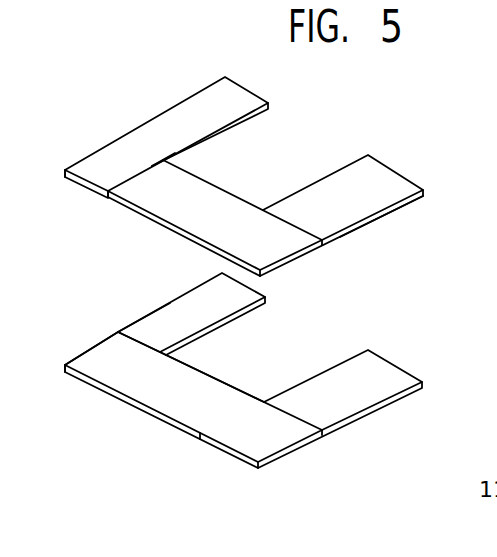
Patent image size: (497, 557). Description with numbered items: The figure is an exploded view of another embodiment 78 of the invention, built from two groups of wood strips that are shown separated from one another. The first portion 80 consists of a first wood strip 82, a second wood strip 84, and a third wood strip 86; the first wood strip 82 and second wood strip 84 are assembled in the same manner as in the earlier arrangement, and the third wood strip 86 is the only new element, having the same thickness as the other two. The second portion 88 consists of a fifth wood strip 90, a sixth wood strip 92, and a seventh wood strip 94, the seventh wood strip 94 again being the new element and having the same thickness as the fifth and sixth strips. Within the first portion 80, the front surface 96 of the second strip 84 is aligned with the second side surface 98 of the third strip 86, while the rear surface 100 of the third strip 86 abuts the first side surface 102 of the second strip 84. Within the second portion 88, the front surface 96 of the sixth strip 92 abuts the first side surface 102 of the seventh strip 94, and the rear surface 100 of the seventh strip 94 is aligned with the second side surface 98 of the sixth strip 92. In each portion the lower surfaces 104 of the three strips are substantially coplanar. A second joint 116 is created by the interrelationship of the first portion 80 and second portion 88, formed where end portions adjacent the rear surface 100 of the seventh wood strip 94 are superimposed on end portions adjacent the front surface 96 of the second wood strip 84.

The embodiment 78 is at (351, 117).
The first portion 80 is at (424, 388).
The first wood strip 82 is at (328, 438).
The second wood strip 84 is at (181, 430).
The third wood strip 86 is at (183, 294).
The second portion 88 is at (426, 188).
The fifth wood strip 90 is at (402, 208).
The sixth wood strip 92 is at (148, 216).
The seventh wood strip 94 is at (148, 118).
The front surface 96 is at (148, 174).
The second side surface 98 is at (115, 203).
The rear surface 100 is at (63, 175).
The first side surface 102 is at (243, 122).
The lower surfaces 104 is at (265, 111).
The second joint 116 is at (65, 370).